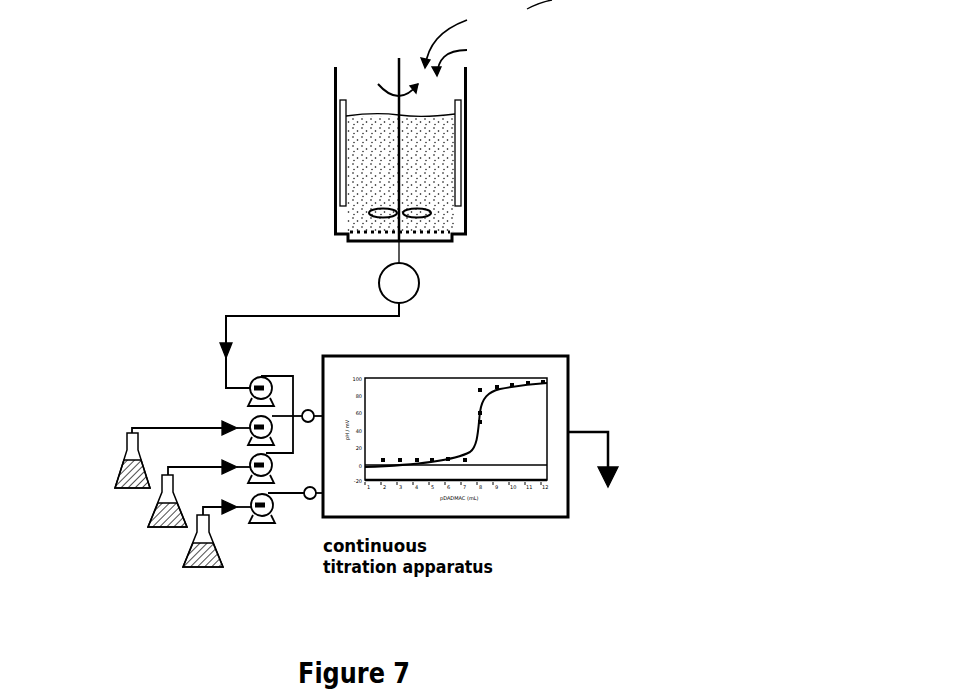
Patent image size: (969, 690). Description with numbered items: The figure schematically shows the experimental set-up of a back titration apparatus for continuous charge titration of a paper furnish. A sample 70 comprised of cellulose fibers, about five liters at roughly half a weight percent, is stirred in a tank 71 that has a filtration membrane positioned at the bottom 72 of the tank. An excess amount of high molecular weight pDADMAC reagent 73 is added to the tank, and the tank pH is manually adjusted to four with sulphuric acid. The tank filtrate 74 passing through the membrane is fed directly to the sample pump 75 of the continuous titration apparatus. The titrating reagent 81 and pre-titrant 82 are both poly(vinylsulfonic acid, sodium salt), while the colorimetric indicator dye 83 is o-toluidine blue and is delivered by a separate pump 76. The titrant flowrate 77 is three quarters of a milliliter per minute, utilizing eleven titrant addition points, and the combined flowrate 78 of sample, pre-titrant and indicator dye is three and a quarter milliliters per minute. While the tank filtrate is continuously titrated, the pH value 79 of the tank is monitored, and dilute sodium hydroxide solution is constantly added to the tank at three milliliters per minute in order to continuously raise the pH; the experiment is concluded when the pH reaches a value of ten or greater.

The sample 70 is at (380, 140).
The tank 71 is at (334, 137).
The bottom of the tank 72 is at (442, 242).
The pDADMAC reagent 73 is at (545, 37).
The tank filtrate 74 is at (310, 314).
The sample pump 75 is at (250, 384).
The separate pump 76 is at (255, 463).
The titrant flowrate 77 is at (310, 500).
The combined flowrate of sample, pre-titrant and indicator dye 78 is at (307, 408).
The pH value 79 is at (419, 287).
The titrating reagent 81 is at (187, 553).
The pre-titrant 82 is at (118, 472).
The colorimetric indicator dye 83 is at (153, 513).